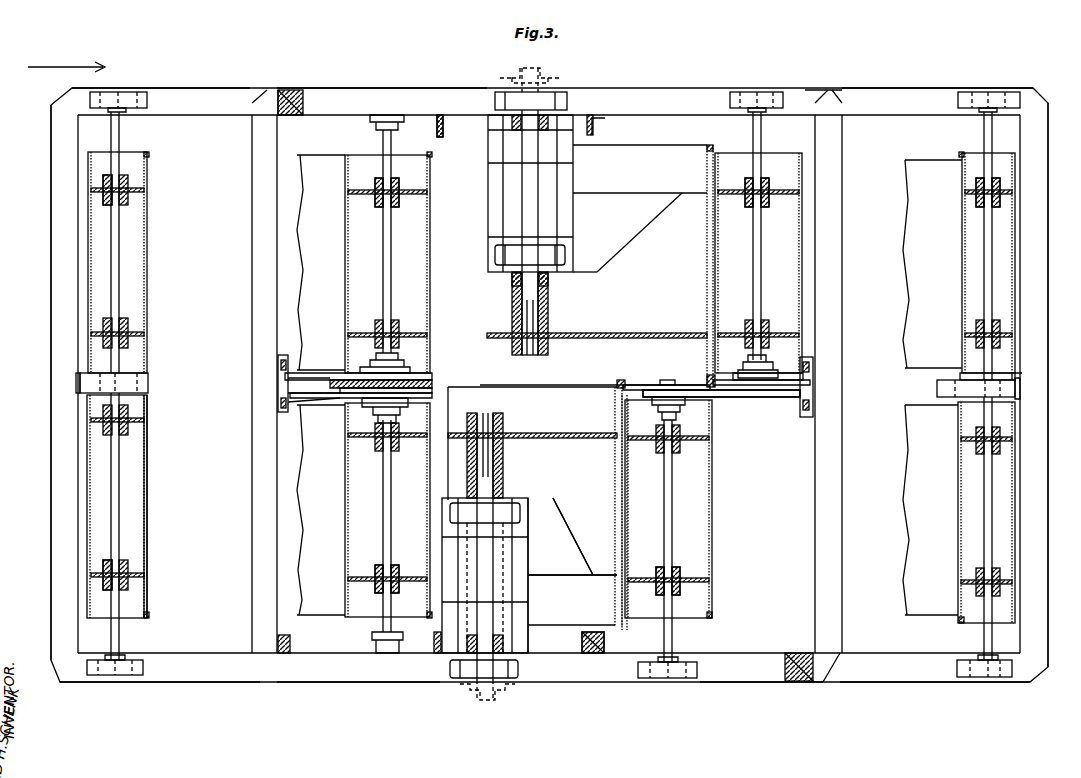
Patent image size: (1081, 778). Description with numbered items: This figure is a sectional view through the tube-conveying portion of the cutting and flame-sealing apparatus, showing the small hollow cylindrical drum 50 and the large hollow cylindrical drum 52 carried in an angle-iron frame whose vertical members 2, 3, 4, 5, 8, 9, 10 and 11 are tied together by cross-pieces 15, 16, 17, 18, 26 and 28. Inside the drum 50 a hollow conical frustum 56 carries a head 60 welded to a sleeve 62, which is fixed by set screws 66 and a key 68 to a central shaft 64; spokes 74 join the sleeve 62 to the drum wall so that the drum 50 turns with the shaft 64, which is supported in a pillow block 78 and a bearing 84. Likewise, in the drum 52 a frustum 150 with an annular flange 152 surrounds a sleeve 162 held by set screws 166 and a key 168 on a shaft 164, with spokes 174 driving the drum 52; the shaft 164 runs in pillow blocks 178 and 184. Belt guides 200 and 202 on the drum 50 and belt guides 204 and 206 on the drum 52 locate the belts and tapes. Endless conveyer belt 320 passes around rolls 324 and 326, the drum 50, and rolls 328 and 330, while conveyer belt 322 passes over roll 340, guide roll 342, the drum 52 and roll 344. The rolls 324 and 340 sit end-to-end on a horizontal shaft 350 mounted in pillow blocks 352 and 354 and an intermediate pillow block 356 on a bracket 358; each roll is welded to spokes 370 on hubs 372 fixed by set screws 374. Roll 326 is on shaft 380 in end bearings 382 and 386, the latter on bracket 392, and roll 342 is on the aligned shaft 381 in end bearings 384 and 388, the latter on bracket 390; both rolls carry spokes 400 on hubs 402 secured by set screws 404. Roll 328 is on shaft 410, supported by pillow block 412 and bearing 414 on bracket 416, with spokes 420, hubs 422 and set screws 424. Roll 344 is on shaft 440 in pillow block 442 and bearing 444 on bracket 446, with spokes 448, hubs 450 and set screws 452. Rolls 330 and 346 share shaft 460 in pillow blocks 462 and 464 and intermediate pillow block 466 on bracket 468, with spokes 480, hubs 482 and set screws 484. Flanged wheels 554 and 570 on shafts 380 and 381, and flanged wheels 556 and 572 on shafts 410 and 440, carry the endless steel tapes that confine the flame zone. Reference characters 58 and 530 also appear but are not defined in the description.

The vertical member 2 is at (282, 670).
The vertical member 3 is at (432, 645).
The vertical member 4 is at (587, 645).
The vertical member 5 is at (800, 653).
The vertical member 8 is at (290, 95).
The vertical member 9 is at (441, 127).
The vertical member 10 is at (594, 120).
The vertical member 11 is at (812, 100).
The cross-piece 15 is at (198, 668).
The cross-piece 16 is at (907, 670).
The cross-piece 17 is at (178, 96).
The cross-piece 18 is at (908, 96).
The cross-piece 26 is at (55, 350).
The cross-piece 28 is at (1048, 437).
The small hollow cylindrical drum 50 is at (617, 500).
The large hollow cylindrical drum 52 is at (707, 282).
The hollow conical frustum 56 is at (572, 545).
The bottom wall 58 is at (596, 577).
The head 60 is at (540, 498).
The sleeve 62 is at (500, 470).
The shaft 64 is at (478, 414).
The set screws 66 is at (472, 490).
The key 68 is at (489, 414).
The spokes 74 is at (555, 437).
The pillow block 78 is at (515, 678).
The bearing 84 is at (512, 522).
The hollow conical frustum 150 is at (633, 243).
The annular flange 152 is at (683, 193).
The sleeve 162 is at (547, 310).
The shaft 164 is at (535, 185).
The set screws 166 is at (548, 121).
The key 168 is at (530, 356).
The spokes 174 is at (640, 333).
The pillow block 178 is at (562, 97).
The pillow block 184 is at (560, 258).
The belt guide 200 is at (620, 385).
The belt guide 202 is at (625, 625).
The belt guide 204 is at (707, 374).
The belt guide 206 is at (711, 148).
The endless conveyer belt 320 is at (88, 480).
The endless conveyer belt 322 is at (88, 237).
The roll 324 is at (147, 500).
The roll 326 is at (345, 515).
The roll 328 is at (712, 530).
The roll 330 is at (958, 528).
The roll 340 is at (147, 282).
The guide roll 342 is at (345, 265).
The roll 344 is at (802, 258).
The roll 346 is at (962, 265).
The horizontal shaft 350 is at (118, 640).
The pillow block 352 is at (125, 670).
The pillow block 354 is at (118, 96).
The pillow block 356 is at (140, 385).
The bracket 358 is at (80, 383).
The spokes 370 is at (128, 190).
The hubs 372 is at (128, 198).
The set screws 374 is at (105, 343).
The shaft 380 is at (390, 510).
The shaft 381 is at (389, 275).
The end bearing 382 is at (374, 648).
The end bearing 384 is at (378, 128).
The end bearing 386 is at (360, 400).
The end bearing 388 is at (368, 348).
The bracket 390 is at (345, 367).
The bracket 392 is at (294, 412).
The spokes 400 is at (374, 195).
The hubs 402 is at (410, 195).
The set screws 404 is at (385, 185).
The shaft 410 is at (672, 637).
The pillow block 412 is at (680, 670).
The bearing 414 is at (676, 402).
The bracket 416 is at (787, 410).
The spokes 420 is at (690, 575).
The hubs 422 is at (658, 575).
The set screws 424 is at (680, 594).
The shaft 440 is at (760, 142).
The pillow block 442 is at (750, 96).
The bearing 444 is at (765, 366).
The bracket 446 is at (810, 378).
The spokes 448 is at (776, 195).
The hubs 450 is at (747, 205).
The set screws 452 is at (747, 180).
The shaft 460 is at (985, 469).
The pillow block 462 is at (985, 672).
The pillow block 464 is at (990, 96).
The pillow block 466 is at (963, 380).
The bracket 468 is at (937, 388).
The spokes 480 is at (985, 196).
The hubs 482 is at (978, 200).
The set screws 484 is at (978, 186).
The cage end cap 530 is at (147, 158).
The flanged wheel 554 is at (432, 393).
The flanged wheel 556 is at (632, 385).
The flanged wheel 570 is at (440, 375).
The flanged wheel 572 is at (813, 391).